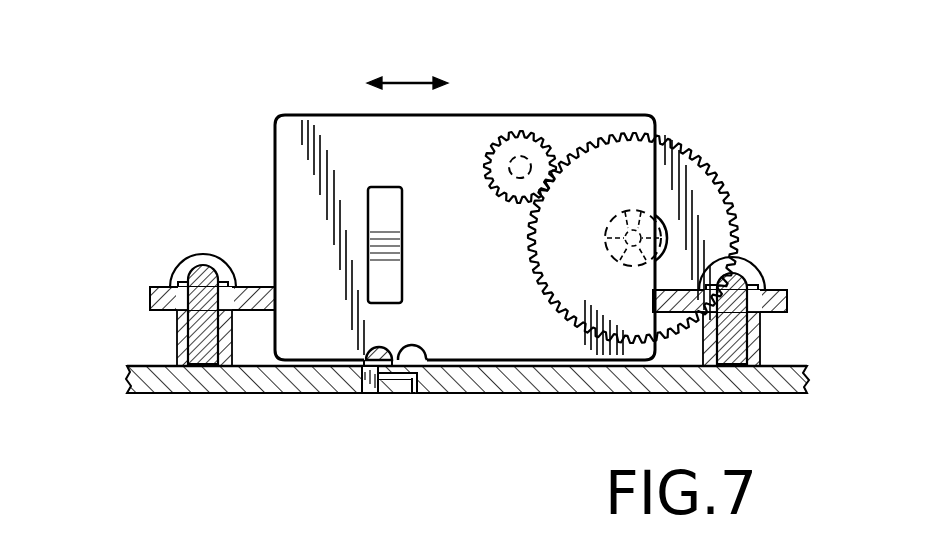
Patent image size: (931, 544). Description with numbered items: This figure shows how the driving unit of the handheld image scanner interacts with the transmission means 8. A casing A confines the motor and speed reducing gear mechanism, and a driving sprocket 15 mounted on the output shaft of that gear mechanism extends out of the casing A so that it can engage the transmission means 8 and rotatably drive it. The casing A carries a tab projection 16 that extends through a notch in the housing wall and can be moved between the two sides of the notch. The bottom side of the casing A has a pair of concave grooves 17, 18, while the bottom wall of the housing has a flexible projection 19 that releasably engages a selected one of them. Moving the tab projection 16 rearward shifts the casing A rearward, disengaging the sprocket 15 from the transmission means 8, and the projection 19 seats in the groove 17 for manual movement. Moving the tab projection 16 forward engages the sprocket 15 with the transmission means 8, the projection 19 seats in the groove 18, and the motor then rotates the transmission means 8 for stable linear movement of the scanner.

The casing A is at (290, 157).
The transmission means 8 is at (703, 178).
The driving sprocket 15 is at (520, 165).
The tab projection 16 is at (386, 198).
The concave groove 17 is at (417, 395).
The concave groove 18 is at (375, 348).
The flexible projection 19 is at (377, 395).